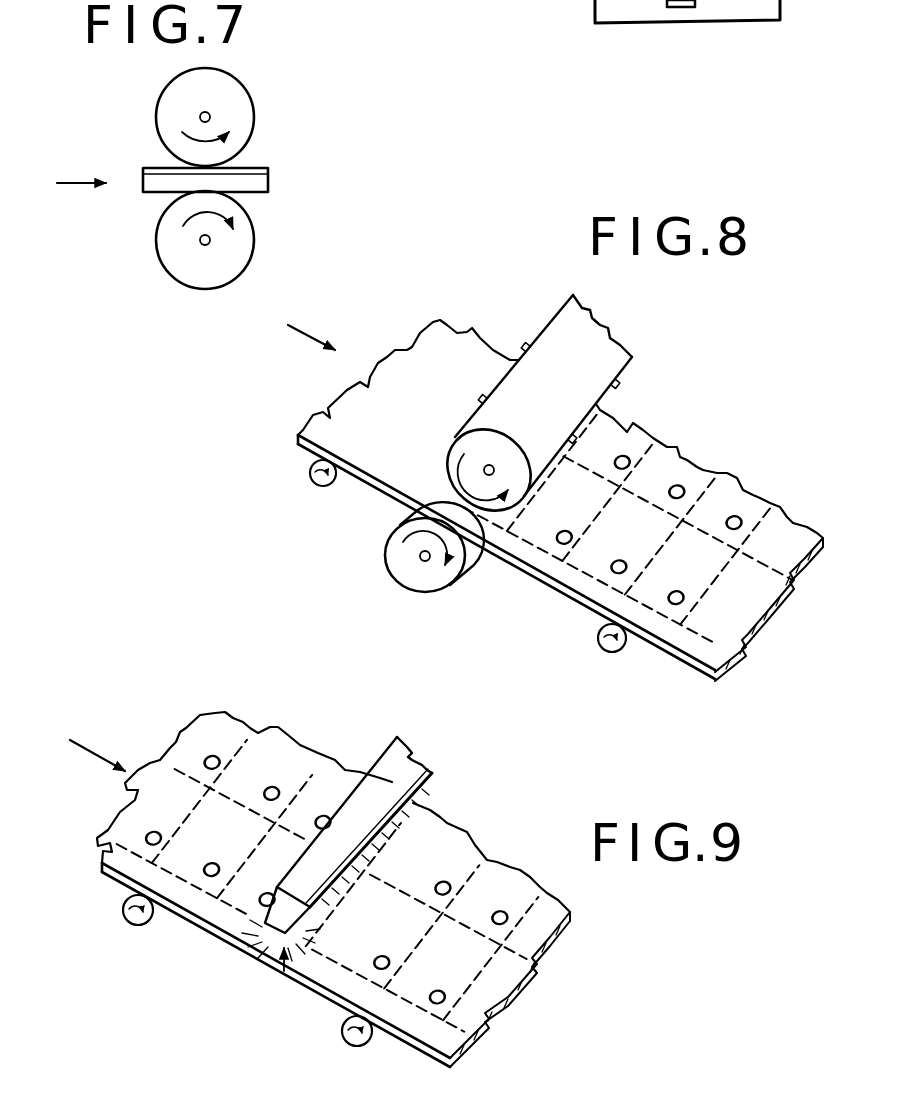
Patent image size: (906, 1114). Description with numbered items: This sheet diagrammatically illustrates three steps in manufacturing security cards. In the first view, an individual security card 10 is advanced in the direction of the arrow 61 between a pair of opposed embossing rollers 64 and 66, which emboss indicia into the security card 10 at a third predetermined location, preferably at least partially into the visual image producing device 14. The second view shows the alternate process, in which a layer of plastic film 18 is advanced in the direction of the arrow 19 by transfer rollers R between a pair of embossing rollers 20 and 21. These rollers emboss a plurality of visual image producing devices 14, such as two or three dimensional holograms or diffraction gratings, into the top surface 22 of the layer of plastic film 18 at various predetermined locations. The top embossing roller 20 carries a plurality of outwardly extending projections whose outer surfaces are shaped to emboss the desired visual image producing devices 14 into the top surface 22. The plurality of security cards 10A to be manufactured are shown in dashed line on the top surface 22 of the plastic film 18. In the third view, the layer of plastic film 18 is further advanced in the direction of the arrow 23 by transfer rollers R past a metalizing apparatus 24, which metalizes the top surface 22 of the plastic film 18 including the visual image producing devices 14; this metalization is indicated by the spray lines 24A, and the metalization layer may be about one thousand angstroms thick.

In FIG. 7, the security card 10 is at (142, 180).
In FIG. 8, the security card 10A is at (647, 460).
In FIG. 9, the security card 10A is at (225, 768).
In FIG. 8, the visual image producing device 14 is at (626, 460).
In FIG. 9, the visual image producing device 14 is at (275, 786).
In FIG. 8, the layer of plastic film 18 is at (395, 347).
In FIG. 9, the layer of plastic film 18 is at (185, 733).
In FIG. 8, the arrow 19 is at (340, 322).
In FIG. 8, the top embossing roller 20 is at (547, 313).
In FIG. 8, the embossing roller 21 is at (402, 576).
In FIG. 8, the top surface 22 is at (420, 437).
In FIG. 9, the top surface 22 is at (232, 839).
In FIG. 9, the arrow 23 is at (105, 755).
In FIG. 9, the metalizing apparatus 24 is at (380, 743).
In FIG. 9, the spray lines 24A is at (284, 958).
In FIG. 7, the arrow 61 is at (86, 187).
In FIG. 7, the embossing roller 64 is at (255, 113).
In FIG. 7, the embossing roller 66 is at (257, 249).
In FIG. 8, the transfer rollers R is at (315, 490).
In FIG. 9, the transfer rollers R is at (148, 927).